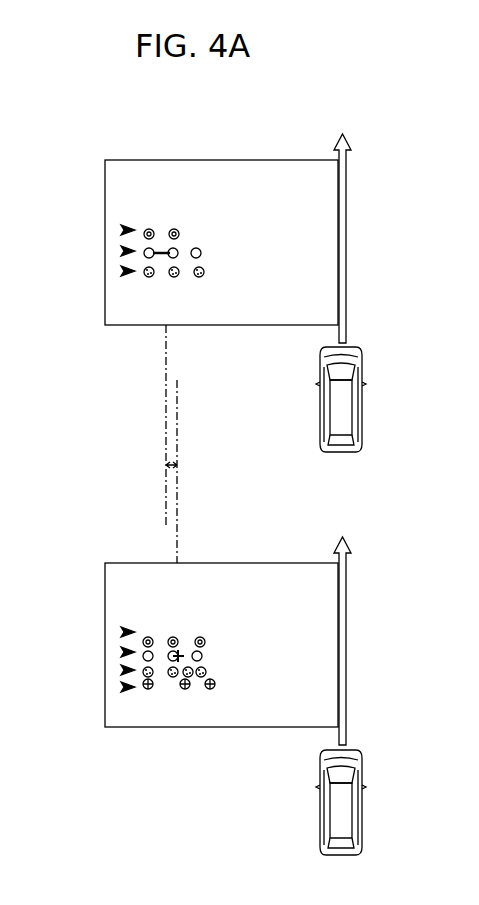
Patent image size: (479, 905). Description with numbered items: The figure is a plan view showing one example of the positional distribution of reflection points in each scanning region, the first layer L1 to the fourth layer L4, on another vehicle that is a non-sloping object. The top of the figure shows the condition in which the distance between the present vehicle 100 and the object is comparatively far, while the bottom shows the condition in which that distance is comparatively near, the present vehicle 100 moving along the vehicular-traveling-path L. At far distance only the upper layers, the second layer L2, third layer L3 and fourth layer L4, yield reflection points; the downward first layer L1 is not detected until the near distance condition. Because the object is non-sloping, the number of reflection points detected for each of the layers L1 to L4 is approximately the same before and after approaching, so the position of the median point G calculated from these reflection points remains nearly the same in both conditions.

The present vehicle 100 is at (363, 415).
The vehicular-traveling-path L is at (346, 235).
The median point G is at (166, 232).
The first layer L1 is at (124, 687).
The second layer L2 is at (124, 271).
The third layer L3 is at (124, 251).
The fourth layer L4 is at (124, 230).